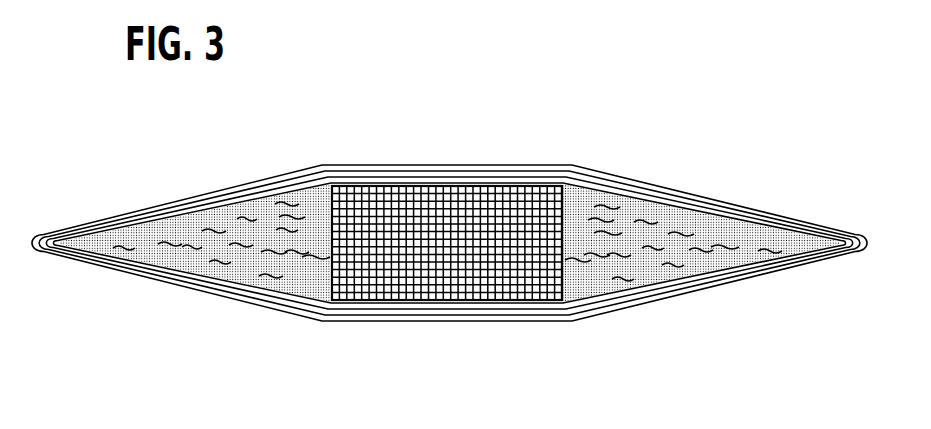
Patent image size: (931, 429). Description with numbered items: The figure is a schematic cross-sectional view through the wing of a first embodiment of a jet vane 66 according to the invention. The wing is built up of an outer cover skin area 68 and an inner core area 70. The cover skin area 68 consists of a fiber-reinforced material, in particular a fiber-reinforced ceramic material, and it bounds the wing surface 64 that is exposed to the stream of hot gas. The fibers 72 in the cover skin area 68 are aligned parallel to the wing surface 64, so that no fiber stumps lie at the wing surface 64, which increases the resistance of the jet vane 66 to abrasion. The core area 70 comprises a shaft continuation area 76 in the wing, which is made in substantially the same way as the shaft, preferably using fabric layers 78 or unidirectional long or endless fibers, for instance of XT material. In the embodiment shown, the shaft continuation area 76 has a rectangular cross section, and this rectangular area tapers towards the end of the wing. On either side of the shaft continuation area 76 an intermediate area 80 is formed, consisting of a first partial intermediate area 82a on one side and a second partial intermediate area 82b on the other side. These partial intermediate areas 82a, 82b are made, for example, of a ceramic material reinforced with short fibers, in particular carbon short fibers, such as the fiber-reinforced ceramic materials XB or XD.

The jet vane 66 is at (480, 122).
The wing surface 64 is at (107, 217).
The fibers 72 is at (793, 227).
The intermediate area 80 is at (191, 298).
The first partial intermediate area 82a is at (280, 216).
The second partial intermediate area 82b is at (643, 220).
The cover skin area 68 is at (767, 290).
The shaft continuation area 76 is at (377, 280).
The fabric layers 78 is at (457, 279).
The core area 70 is at (565, 315).